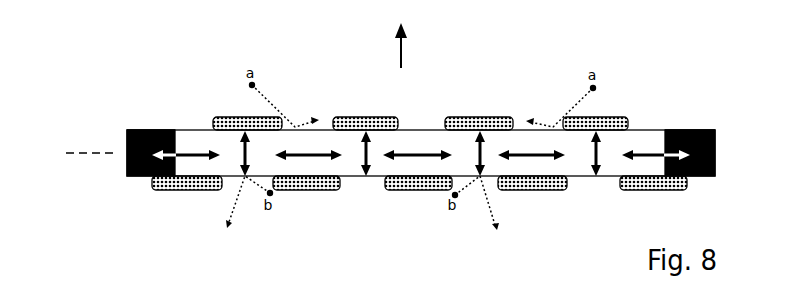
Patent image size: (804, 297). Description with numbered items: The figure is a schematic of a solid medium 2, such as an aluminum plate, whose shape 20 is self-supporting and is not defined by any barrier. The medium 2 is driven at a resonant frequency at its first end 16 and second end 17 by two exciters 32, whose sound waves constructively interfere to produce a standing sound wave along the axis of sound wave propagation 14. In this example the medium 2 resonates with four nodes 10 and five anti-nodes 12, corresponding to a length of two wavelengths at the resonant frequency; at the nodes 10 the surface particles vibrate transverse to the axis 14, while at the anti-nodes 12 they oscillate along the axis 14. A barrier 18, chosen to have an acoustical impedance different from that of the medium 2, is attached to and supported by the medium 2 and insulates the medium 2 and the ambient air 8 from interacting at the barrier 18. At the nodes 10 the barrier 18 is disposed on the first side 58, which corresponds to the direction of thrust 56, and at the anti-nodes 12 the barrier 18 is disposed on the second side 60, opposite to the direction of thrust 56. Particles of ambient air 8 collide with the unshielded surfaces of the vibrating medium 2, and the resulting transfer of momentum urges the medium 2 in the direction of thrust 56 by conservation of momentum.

The medium 2 is at (421, 186).
The shape 20 is at (352, 168).
The ambient air 8 is at (421, 189).
The nodes 10 is at (243, 153).
The anti-nodes 12 is at (188, 153).
The axis of sound wave propagation 14 is at (105, 152).
The first end 16 is at (175, 130).
The second end 17 is at (663, 130).
The barrier 18 is at (387, 120).
The exciters 32 is at (137, 176).
The direction of thrust 56 is at (400, 48).
The first side 58 is at (604, 118).
The second side 60 is at (655, 190).